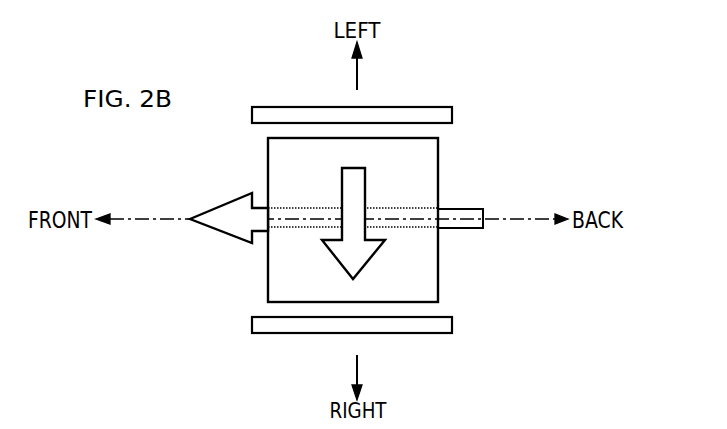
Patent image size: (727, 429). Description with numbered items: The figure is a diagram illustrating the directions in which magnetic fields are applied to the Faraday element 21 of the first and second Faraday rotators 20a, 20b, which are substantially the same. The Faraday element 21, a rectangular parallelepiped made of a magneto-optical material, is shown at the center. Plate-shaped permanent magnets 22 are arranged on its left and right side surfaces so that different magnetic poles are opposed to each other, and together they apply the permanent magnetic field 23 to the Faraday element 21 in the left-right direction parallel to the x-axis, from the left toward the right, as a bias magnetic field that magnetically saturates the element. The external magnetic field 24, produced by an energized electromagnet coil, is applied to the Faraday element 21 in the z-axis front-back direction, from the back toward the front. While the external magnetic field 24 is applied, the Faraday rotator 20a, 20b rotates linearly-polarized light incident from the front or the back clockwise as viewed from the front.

The first Faraday rotator 20a is at (367, 223).
The second Faraday rotator 20b is at (449, 87).
The Faraday element 21 is at (378, 271).
The permanent magnets 22 is at (384, 115).
The permanent magnetic field 23 is at (358, 178).
The external magnetic field 24 is at (225, 230).